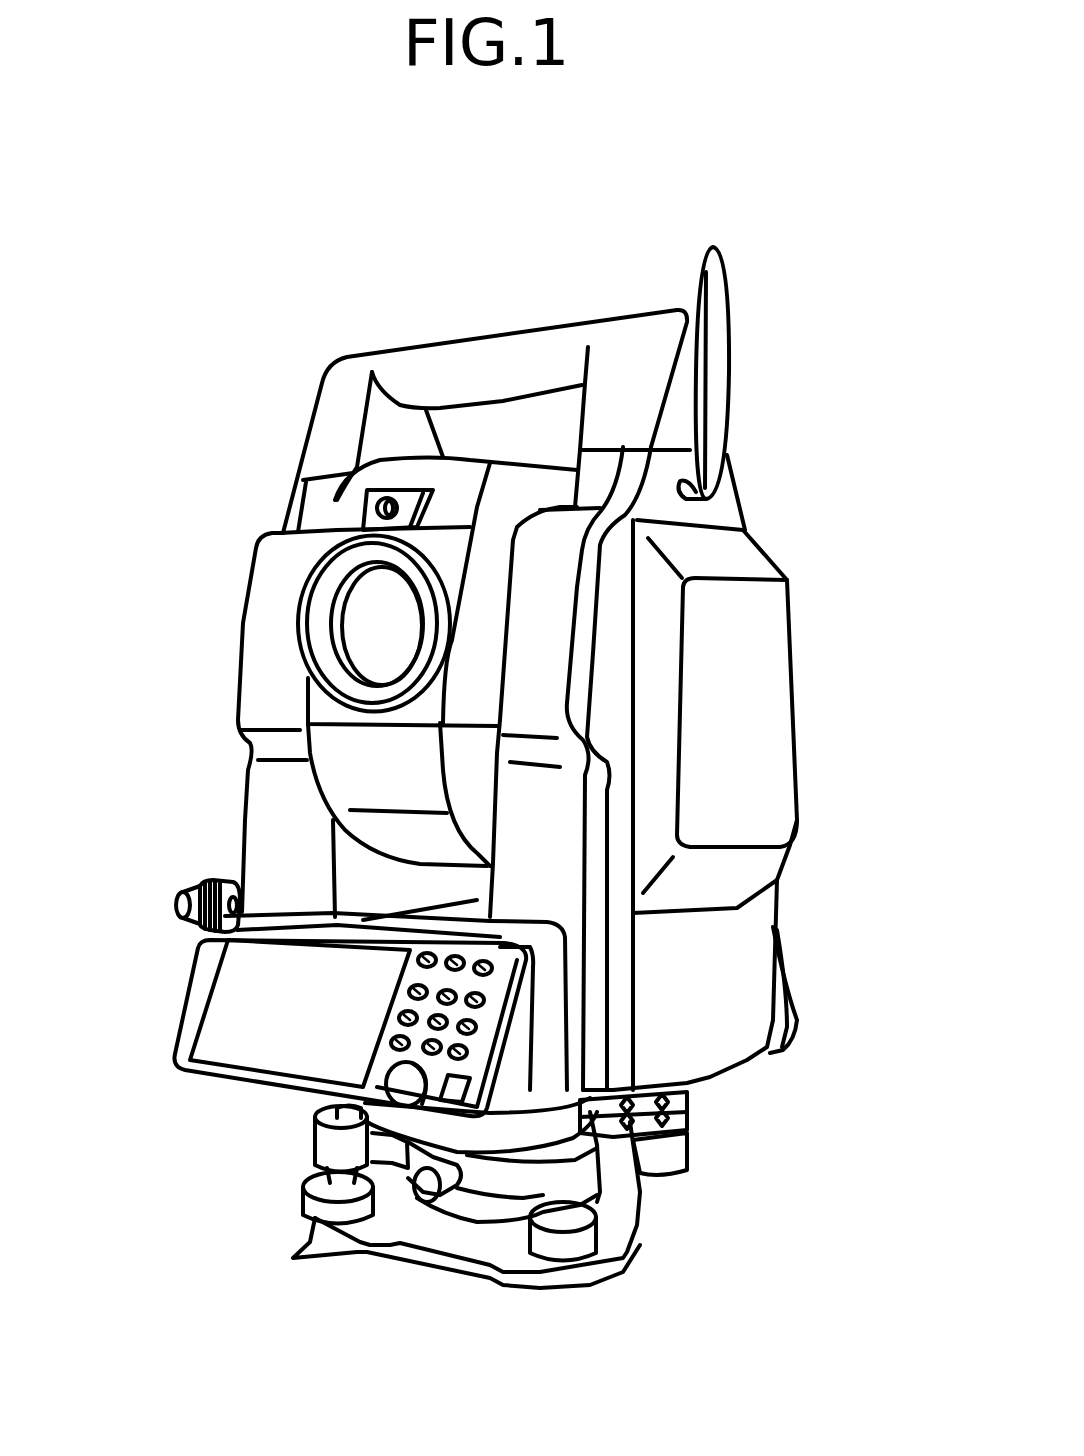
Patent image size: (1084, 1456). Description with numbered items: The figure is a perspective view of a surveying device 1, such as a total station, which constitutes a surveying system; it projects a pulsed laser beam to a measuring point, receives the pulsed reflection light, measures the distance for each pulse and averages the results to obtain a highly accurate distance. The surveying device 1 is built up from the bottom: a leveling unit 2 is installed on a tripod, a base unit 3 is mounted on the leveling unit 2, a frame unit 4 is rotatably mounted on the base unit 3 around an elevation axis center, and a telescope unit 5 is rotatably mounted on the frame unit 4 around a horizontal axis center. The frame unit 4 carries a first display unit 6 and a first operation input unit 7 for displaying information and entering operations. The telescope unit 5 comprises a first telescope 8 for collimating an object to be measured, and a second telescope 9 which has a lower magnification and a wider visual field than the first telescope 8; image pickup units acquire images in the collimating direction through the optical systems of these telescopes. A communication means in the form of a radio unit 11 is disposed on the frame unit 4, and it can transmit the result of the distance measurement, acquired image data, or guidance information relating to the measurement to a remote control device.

The surveying device 1 is at (138, 233).
The leveling unit 2 is at (300, 1255).
The base unit 3 is at (683, 1170).
The frame unit 4 is at (773, 550).
The telescope unit 5 is at (353, 770).
The first display unit 6 is at (280, 983).
The first operation input unit 7 is at (383, 1052).
The first telescope 8 is at (363, 627).
The second telescope 9 is at (383, 500).
The radio unit 11 is at (735, 356).